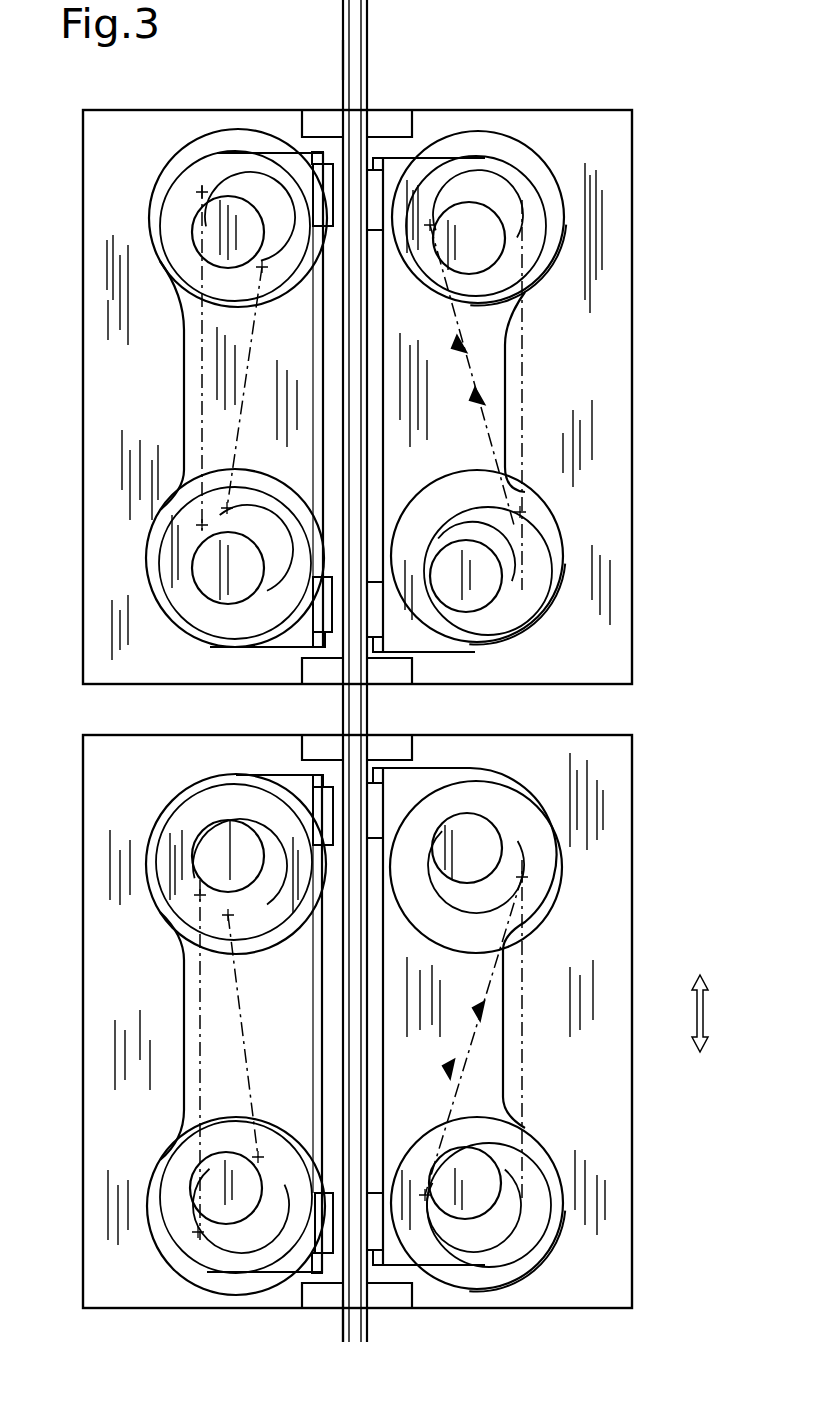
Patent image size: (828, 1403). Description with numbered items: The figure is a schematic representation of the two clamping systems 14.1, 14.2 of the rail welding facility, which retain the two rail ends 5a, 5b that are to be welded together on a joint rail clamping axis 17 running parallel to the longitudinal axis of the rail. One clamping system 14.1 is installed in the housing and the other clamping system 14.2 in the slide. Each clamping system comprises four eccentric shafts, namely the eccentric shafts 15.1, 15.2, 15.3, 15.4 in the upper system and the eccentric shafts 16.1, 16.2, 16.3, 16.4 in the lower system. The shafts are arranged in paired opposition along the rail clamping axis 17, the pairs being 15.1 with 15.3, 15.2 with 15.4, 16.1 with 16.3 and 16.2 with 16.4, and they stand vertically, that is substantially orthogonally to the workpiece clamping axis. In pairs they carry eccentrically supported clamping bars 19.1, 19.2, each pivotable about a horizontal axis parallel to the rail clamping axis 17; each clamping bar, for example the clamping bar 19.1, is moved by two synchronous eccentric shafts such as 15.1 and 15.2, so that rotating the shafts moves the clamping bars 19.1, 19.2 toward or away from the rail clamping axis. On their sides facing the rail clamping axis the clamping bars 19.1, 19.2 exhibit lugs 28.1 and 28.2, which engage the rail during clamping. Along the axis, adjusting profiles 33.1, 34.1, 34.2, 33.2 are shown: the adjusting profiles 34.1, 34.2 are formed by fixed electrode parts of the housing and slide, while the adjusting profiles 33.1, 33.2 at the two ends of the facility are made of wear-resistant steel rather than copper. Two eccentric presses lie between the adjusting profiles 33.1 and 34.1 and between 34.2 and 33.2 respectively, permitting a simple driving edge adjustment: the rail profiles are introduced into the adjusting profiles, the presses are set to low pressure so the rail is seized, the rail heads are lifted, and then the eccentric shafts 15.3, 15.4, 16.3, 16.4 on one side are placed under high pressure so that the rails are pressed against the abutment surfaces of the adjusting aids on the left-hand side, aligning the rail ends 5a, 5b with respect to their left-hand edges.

The rail clamping axis 17 is at (357, 31).
The rail end 5a is at (374, 60).
The rail end 5b is at (372, 1331).
The clamping system 14.1 is at (640, 317).
The clamping system 14.2 is at (634, 770).
The eccentric shaft 15.1 is at (182, 147).
The eccentric shaft 15.2 is at (160, 593).
The eccentric shaft 15.3 is at (548, 153).
The eccentric shaft 15.4 is at (550, 510).
The eccentric shaft 16.1 is at (163, 810).
The eccentric shaft 16.2 is at (168, 1139).
The eccentric shaft 16.3 is at (560, 891).
The eccentric shaft 16.4 is at (577, 1239).
The clamping bar 19.1 is at (180, 396).
The clamping bar 19.2 is at (512, 388).
The lug 28.1 is at (293, 648).
The lug 28.2 is at (375, 622).
The adjusting profile 33.1 is at (383, 118).
The adjusting profile 33.2 is at (395, 1292).
The adjusting profile 34.1 is at (400, 676).
The adjusting profile 34.2 is at (388, 748).